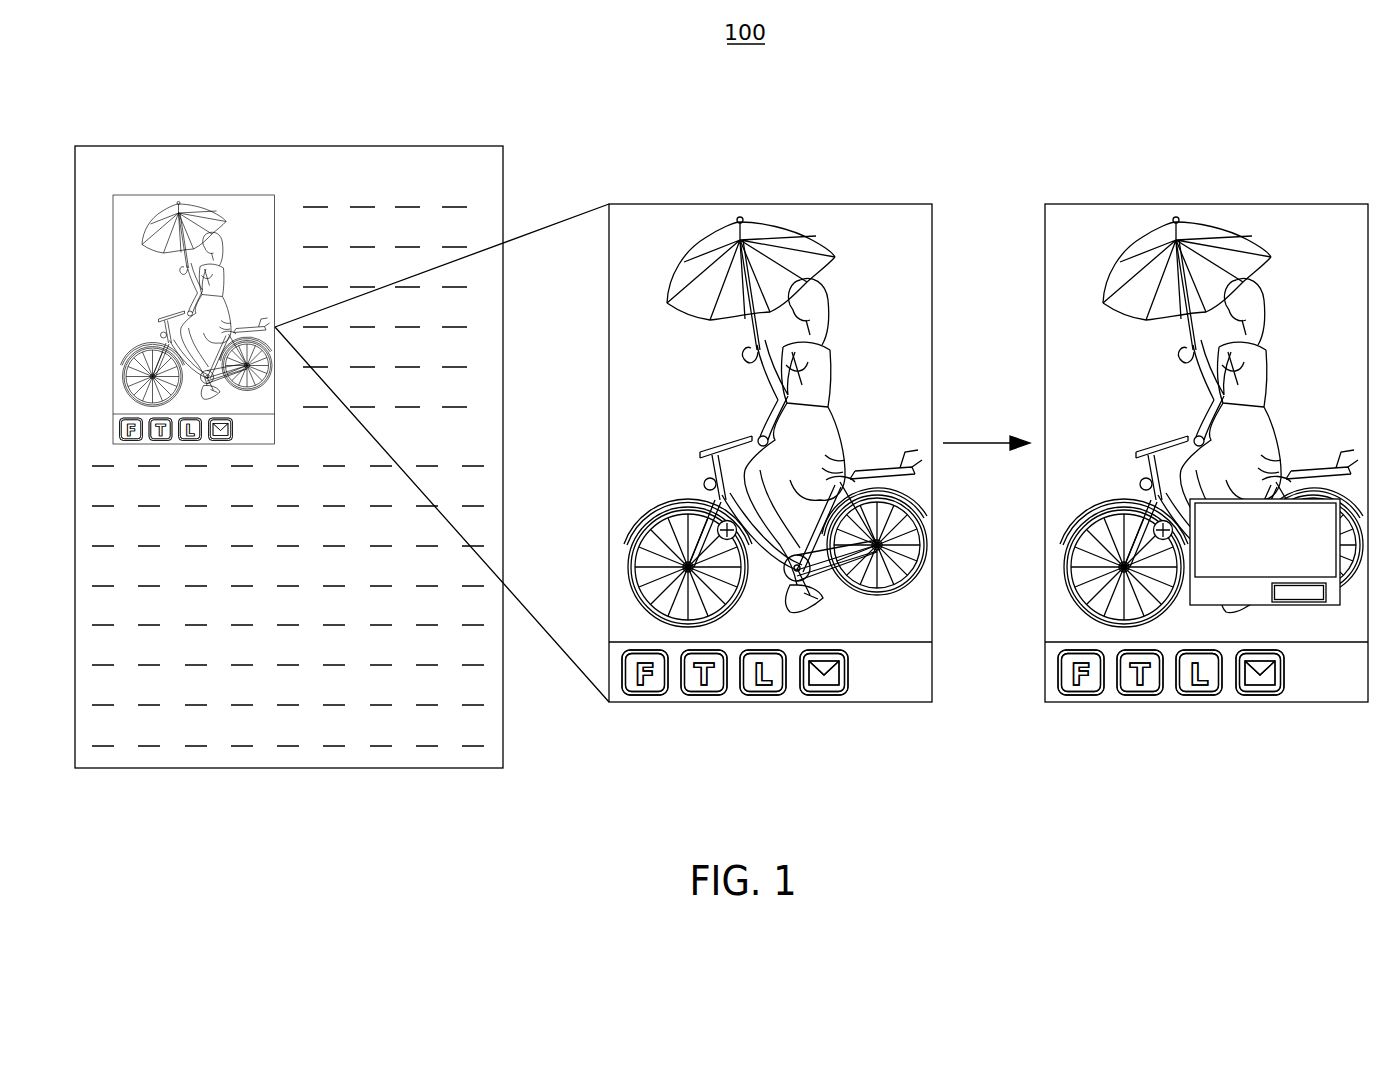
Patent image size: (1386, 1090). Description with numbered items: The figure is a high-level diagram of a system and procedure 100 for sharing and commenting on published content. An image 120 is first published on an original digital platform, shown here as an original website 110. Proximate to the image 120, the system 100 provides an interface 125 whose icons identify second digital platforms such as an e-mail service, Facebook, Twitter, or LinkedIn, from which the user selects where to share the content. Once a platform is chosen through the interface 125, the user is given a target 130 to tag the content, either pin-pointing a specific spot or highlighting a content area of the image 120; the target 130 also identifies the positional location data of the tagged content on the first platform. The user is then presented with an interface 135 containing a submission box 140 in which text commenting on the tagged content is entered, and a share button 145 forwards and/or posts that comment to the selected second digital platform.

The system and procedure 100 is at (745, 32).
The original website 110 is at (339, 146).
The image 120 is at (130, 195).
The interface 125 is at (160, 441).
The target 130 is at (740, 542).
The interface 135 is at (1269, 641).
The submission box 140 is at (1318, 556).
The share button 145 is at (1296, 605).